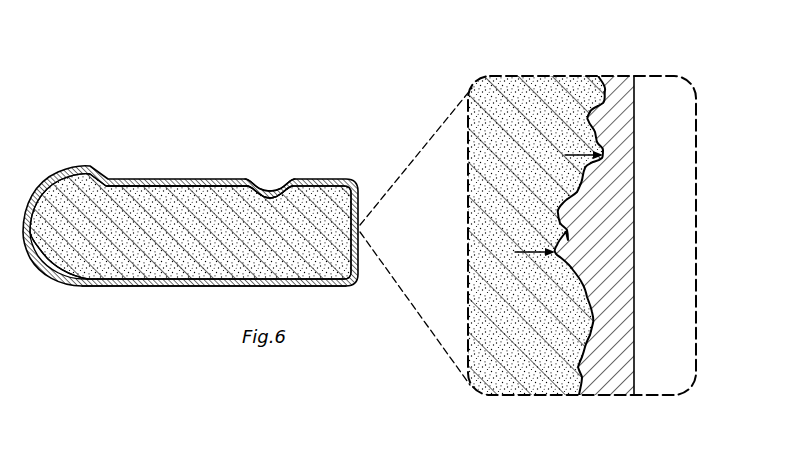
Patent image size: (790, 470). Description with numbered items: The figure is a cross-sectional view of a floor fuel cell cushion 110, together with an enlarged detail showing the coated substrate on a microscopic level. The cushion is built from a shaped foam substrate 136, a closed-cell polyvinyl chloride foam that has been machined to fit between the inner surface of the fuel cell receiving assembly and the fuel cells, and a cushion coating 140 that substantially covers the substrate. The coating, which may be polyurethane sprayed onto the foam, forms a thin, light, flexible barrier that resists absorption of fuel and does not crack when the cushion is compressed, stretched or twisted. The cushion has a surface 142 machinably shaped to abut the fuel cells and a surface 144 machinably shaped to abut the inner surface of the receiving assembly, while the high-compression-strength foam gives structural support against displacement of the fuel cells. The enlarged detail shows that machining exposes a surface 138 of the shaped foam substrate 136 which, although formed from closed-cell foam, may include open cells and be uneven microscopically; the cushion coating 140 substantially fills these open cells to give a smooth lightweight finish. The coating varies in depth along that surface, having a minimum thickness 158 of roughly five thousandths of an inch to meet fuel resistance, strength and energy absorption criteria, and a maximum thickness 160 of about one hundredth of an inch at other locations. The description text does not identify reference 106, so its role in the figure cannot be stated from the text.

The shell / cover layer 106 is at (137, 180).
The floor fuel cell cushion 110 is at (167, 180).
The shaped foam substrate 136 is at (60, 197).
The surface 138 is at (80, 287).
The cushion coating 140 is at (187, 179).
The surface 142 is at (240, 180).
The surface 144 is at (145, 287).
The minimum thickness 158 is at (634, 155).
The maximum thickness 160 is at (634, 252).